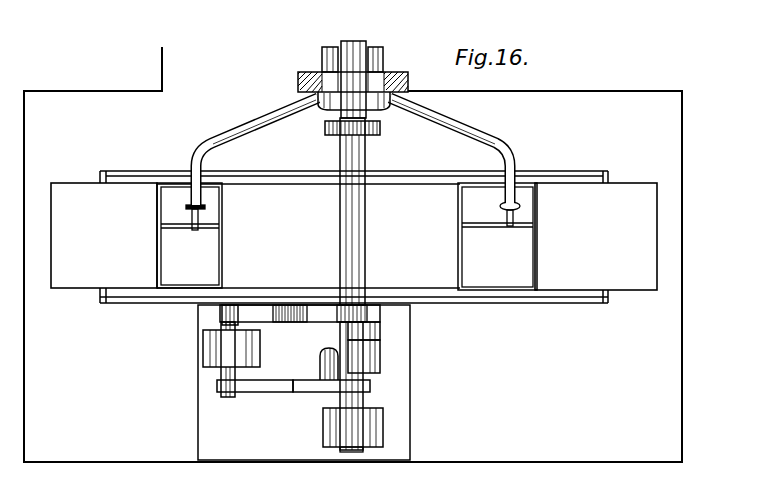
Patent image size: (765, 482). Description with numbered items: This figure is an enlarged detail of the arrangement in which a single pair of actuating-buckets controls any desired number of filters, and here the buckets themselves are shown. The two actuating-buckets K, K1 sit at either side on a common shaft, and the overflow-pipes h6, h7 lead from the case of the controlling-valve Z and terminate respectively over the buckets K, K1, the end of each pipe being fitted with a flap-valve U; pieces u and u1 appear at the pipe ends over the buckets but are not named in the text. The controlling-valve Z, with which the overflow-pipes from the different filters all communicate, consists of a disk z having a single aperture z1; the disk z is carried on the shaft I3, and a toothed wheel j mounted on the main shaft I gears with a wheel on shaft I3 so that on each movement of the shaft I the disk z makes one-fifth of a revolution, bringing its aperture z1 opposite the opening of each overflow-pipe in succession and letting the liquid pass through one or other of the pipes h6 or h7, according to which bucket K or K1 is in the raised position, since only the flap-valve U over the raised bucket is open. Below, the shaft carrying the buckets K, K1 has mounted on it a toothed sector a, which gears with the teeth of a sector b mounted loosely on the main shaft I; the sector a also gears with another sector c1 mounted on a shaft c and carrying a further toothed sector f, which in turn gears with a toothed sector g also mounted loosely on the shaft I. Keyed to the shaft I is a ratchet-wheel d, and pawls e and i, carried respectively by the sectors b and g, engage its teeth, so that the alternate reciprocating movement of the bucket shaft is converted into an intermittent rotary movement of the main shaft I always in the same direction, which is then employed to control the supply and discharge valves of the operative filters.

The actuating-bucket K is at (104, 235).
The actuating-bucket K1 is at (596, 236).
The piston u1 is at (482, 228).
The flap-valve U is at (206, 207).
The piston rod pin u is at (189, 213).
The overflow-pipe h6 is at (222, 141).
The overflow-pipe h7 is at (480, 140).
The shaft of disk z I3 is at (345, 42).
The main shaft I is at (355, 238).
The controlling-valve Z is at (362, 87).
The aperture z1 is at (322, 70).
The disk z is at (385, 72).
The toothed wheel j is at (325, 134).
The toothed sector a is at (283, 303).
The sector b is at (315, 303).
The toothed sector c1 is at (243, 303).
The shaft c is at (228, 398).
The toothed sector f is at (264, 394).
The toothed sector g is at (308, 394).
The pawl i is at (320, 356).
The pawl e is at (380, 331).
The ratchet-wheel d is at (380, 361).